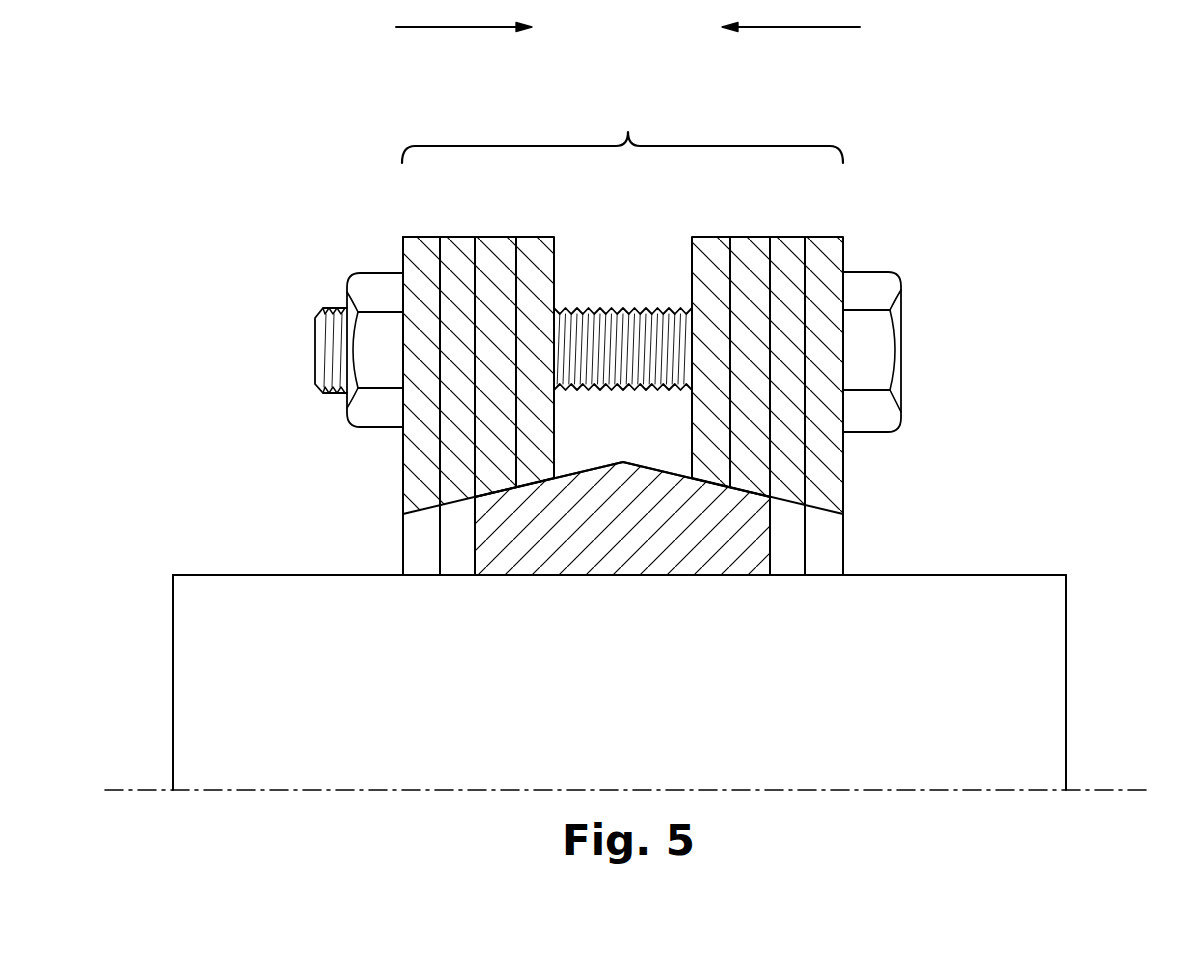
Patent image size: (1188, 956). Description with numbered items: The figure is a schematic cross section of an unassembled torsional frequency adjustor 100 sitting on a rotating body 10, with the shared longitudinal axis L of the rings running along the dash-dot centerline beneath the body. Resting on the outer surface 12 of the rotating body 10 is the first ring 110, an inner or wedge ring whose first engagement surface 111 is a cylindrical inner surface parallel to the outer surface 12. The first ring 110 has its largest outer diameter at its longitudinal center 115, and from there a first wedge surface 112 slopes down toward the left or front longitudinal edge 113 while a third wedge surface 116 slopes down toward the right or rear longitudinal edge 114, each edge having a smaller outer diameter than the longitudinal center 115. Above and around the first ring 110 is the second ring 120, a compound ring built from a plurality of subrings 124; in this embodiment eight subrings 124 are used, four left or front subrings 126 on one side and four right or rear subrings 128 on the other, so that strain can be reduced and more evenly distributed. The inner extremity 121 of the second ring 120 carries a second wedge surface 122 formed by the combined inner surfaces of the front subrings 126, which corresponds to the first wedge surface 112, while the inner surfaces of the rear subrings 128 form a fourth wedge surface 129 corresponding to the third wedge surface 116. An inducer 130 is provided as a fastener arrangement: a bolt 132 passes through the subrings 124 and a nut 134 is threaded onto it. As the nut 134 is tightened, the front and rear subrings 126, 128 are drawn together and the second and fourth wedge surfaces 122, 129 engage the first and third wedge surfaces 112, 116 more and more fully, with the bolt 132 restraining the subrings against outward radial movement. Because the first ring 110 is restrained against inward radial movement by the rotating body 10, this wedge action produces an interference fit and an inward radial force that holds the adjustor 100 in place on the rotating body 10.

The rotating body 10 is at (1025, 672).
The outer surface 12 is at (900, 573).
The torsional frequency adjustor 100 is at (1000, 96).
The first ring 110 is at (641, 541).
The first engagement surface 111 is at (700, 575).
The first wedge surface 112 is at (582, 473).
The left or front longitudinal edge 113 is at (465, 600).
The right or rear longitudinal edge 114 is at (775, 600).
The longitudinal center 115 is at (603, 600).
The third wedge surface 116 is at (656, 473).
The second ring 120 is at (622, 339).
The inner extremity 121 is at (356, 500).
The second wedge surface 122 is at (447, 512).
The subrings 124 is at (711, 237).
The left or front subrings 126 is at (495, 375).
The right or rear subrings 128 is at (798, 375).
The fourth wedge surface 129 is at (806, 512).
The inducer 130 is at (270, 275).
The bolts 132 is at (878, 347).
The nuts 134 is at (368, 403).
The longitudinal axis L is at (1142, 775).